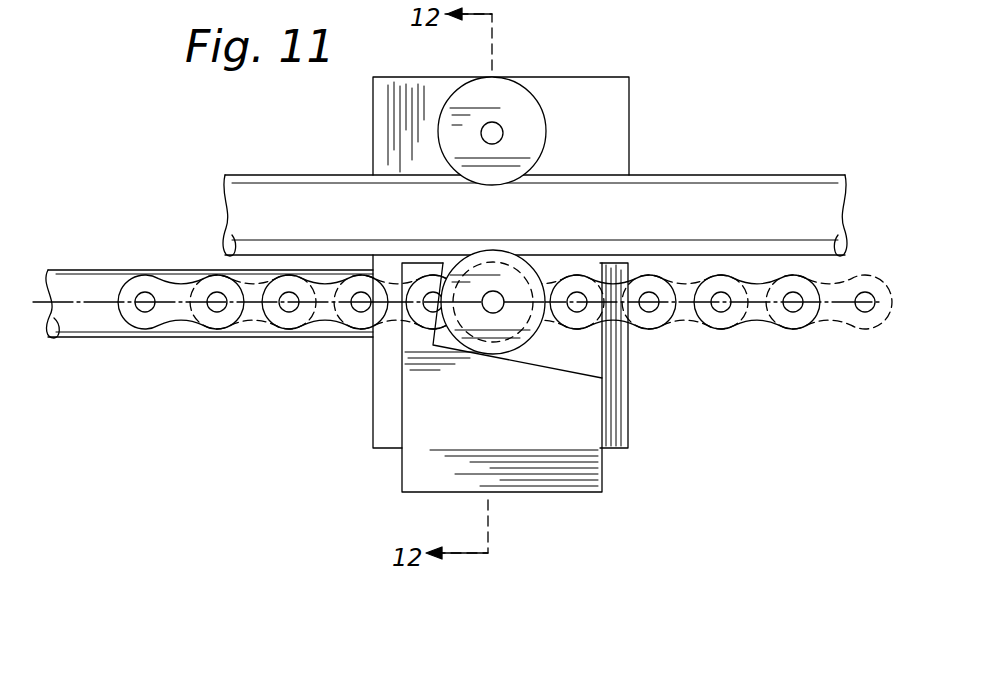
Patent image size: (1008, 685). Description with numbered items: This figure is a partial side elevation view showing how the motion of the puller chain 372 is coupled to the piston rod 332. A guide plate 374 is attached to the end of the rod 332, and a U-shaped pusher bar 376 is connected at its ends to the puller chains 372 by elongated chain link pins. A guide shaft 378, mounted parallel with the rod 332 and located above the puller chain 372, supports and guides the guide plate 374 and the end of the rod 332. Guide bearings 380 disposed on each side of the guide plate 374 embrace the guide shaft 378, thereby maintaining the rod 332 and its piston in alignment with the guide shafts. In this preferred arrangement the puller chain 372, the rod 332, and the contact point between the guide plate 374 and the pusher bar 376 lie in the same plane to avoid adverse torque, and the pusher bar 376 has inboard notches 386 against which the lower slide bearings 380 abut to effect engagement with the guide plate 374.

The piston rod 332 is at (110, 270).
The puller chain 372 is at (314, 336).
The guide plate 374 is at (612, 412).
The pusher bar 376 is at (580, 478).
The guide shaft 378 is at (683, 175).
The guide bearing 380 is at (528, 86).
The inboard notch 386 is at (578, 368).